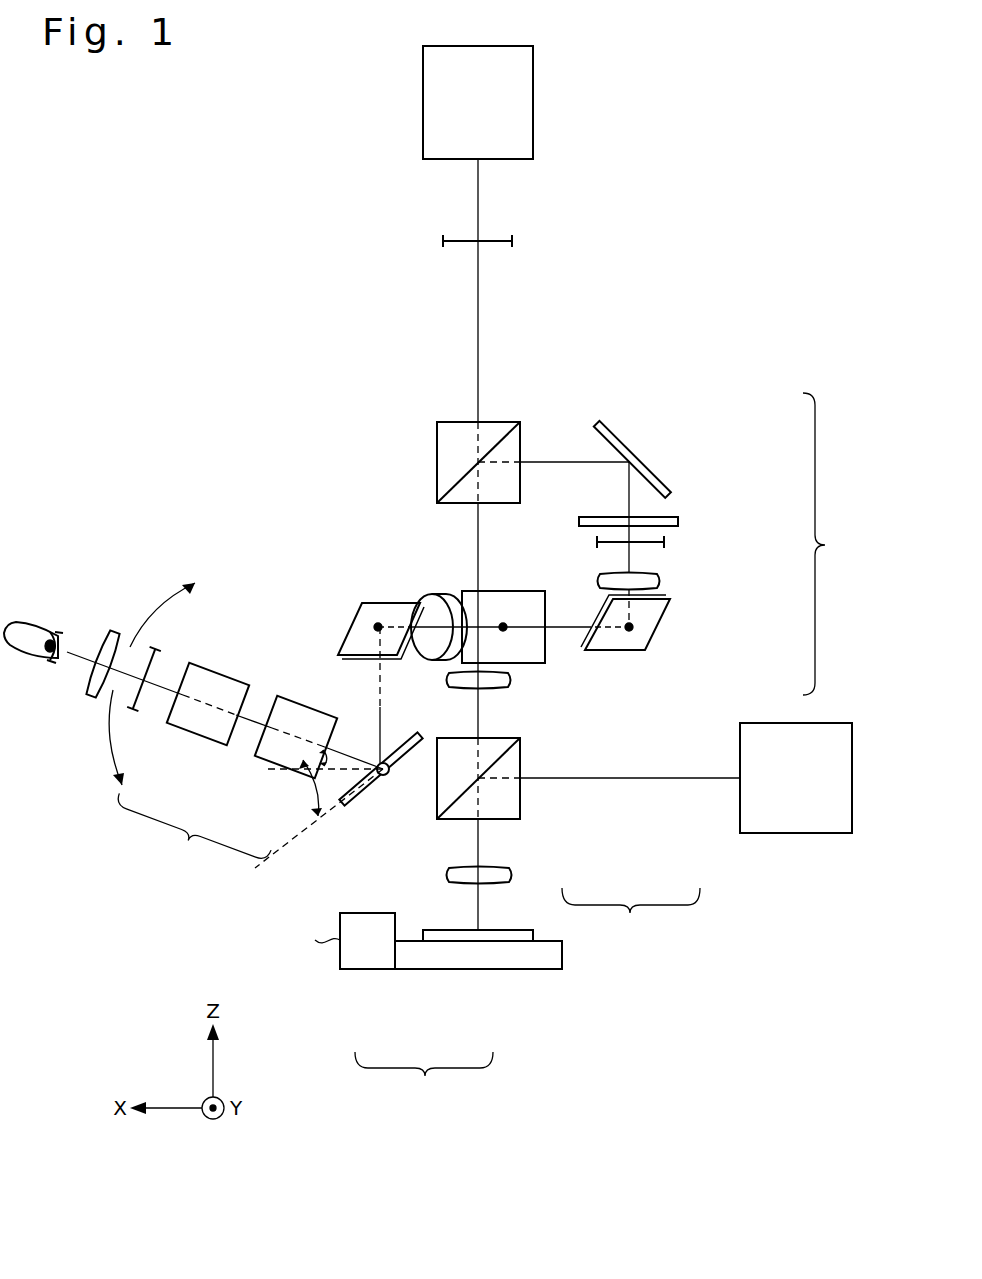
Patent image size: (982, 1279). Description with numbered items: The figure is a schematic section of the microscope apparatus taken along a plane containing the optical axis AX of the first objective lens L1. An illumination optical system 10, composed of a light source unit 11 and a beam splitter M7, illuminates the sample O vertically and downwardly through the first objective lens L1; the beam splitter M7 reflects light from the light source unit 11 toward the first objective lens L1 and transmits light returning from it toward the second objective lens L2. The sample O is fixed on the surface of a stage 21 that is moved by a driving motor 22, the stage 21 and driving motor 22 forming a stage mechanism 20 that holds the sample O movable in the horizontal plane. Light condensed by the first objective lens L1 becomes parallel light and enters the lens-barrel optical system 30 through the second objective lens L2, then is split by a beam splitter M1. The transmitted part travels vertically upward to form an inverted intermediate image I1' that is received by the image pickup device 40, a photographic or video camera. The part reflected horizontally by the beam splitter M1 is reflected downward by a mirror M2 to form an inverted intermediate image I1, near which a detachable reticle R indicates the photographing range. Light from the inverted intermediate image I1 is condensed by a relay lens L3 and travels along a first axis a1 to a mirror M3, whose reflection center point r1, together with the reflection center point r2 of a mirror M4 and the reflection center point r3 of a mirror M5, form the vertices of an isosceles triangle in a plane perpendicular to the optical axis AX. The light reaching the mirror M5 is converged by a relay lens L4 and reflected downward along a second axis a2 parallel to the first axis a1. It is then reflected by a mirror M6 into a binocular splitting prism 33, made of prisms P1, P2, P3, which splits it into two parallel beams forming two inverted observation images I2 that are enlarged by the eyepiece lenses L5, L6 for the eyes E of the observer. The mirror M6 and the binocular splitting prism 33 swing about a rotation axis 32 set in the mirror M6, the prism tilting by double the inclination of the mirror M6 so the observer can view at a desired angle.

The image pickup device 40 is at (533, 103).
The inverted intermediate image for photography I1' is at (521, 241).
The beam splitter M1 is at (437, 462).
The mirror M2 is at (638, 447).
The reticle R is at (678, 519).
The inverted intermediate image I1 is at (698, 541).
The lens-barrel optical system 30 is at (698, 544).
The first axis a1 is at (629, 553).
The relay lens L3 is at (660, 581).
The mirror (first reflecting member) M3 is at (665, 625).
The reflection center point r1 is at (629, 627).
The mirror (second reflecting member) M4 is at (505, 591).
The reflection center point r2 is at (503, 627).
The relay lens L4 is at (432, 594).
The mirror (third reflecting member) M5 is at (352, 625).
The reflection center point r3 is at (378, 627).
The second axis a2 is at (378, 703).
The second objective lens L2 is at (460, 688).
The optical axis AX is at (478, 715).
The beam splitter M7 is at (517, 819).
The illumination optical system 10 is at (644, 832).
The light source unit 11 is at (740, 833).
The first objective lens L1 is at (450, 868).
The sample O is at (440, 930).
The stage mechanism 20 is at (398, 1009).
The stage 21 is at (478, 970).
The driving motor 22 is at (367, 970).
The mirror M6 is at (345, 805).
The rotation axis 32 is at (383, 776).
The binocular splitting prism 33 is at (224, 772).
The prism P1 is at (283, 769).
The prism P2 is at (199, 739).
The prism P3 is at (197, 738).
The inverted observation image I2 is at (158, 647).
The eyepiece lens L5 is at (113, 613).
The eyepiece lens L6 is at (120, 632).
The eye of observer E is at (35, 625).